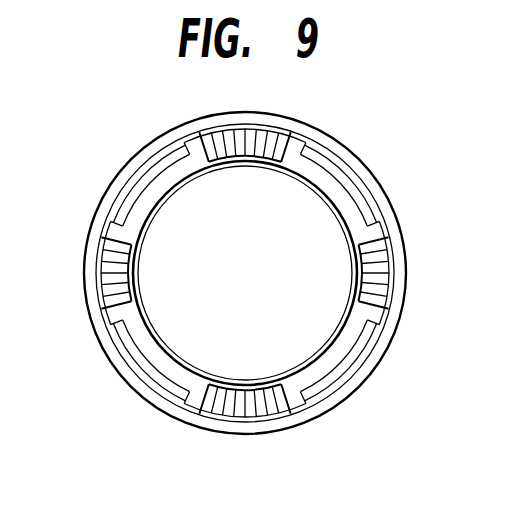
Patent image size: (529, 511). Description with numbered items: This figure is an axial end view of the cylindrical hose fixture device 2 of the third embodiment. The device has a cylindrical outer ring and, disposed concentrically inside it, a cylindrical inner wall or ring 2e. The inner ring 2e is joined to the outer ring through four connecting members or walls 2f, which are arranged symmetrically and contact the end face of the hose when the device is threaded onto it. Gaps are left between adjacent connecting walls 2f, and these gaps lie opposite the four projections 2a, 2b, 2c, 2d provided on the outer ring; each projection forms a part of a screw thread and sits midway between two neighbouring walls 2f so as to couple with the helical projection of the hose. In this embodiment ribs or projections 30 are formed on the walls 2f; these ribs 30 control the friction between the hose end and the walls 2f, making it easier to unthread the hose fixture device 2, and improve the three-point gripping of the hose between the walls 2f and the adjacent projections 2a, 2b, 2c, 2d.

The hose fixture device 2 is at (172, 428).
The projection 2a is at (131, 199).
The projection 2b is at (364, 196).
The projection 2c is at (364, 351).
The projection 2d is at (151, 387).
The inner ring 2e is at (171, 352).
The connecting member 2f is at (290, 134).
The rib 30 is at (261, 154).